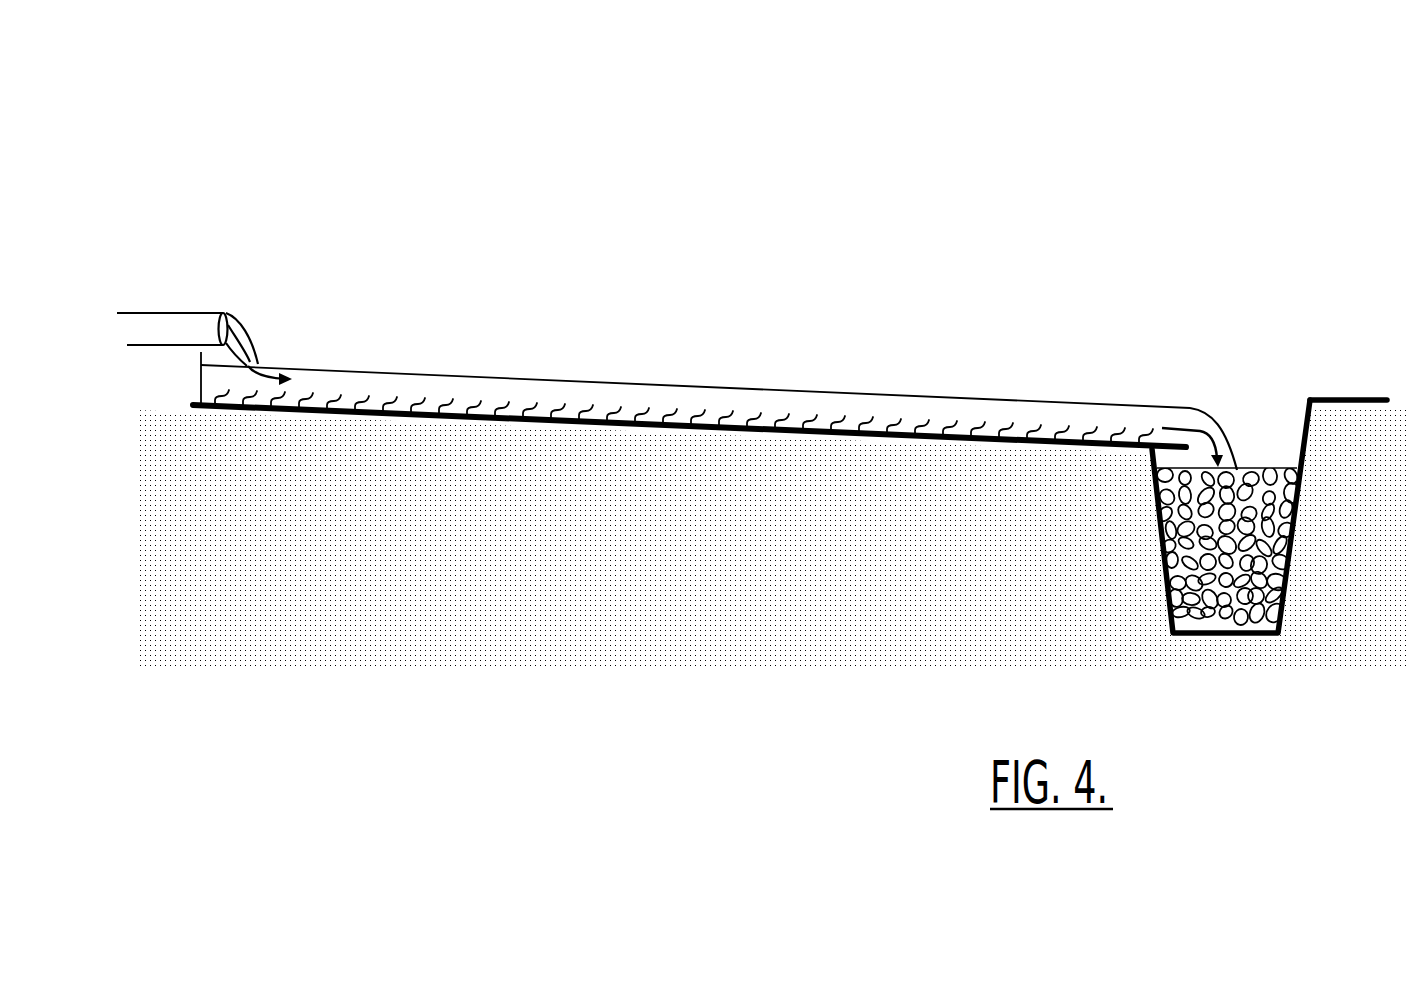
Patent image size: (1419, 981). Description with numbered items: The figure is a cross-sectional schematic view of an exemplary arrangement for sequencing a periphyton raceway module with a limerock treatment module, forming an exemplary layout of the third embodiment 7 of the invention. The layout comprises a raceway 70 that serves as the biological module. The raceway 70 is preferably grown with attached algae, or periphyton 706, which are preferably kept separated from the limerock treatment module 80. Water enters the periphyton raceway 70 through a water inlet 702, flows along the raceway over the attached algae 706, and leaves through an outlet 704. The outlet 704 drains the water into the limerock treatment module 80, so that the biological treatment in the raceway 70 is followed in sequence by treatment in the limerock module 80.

The third embodiment 7 is at (187, 125).
The raceway 70 is at (482, 350).
The water inlet 702 is at (262, 365).
The outlet 704 is at (1183, 417).
The attached algae (periphyton) 706 is at (587, 408).
The limerock treatment module 80 is at (1245, 633).